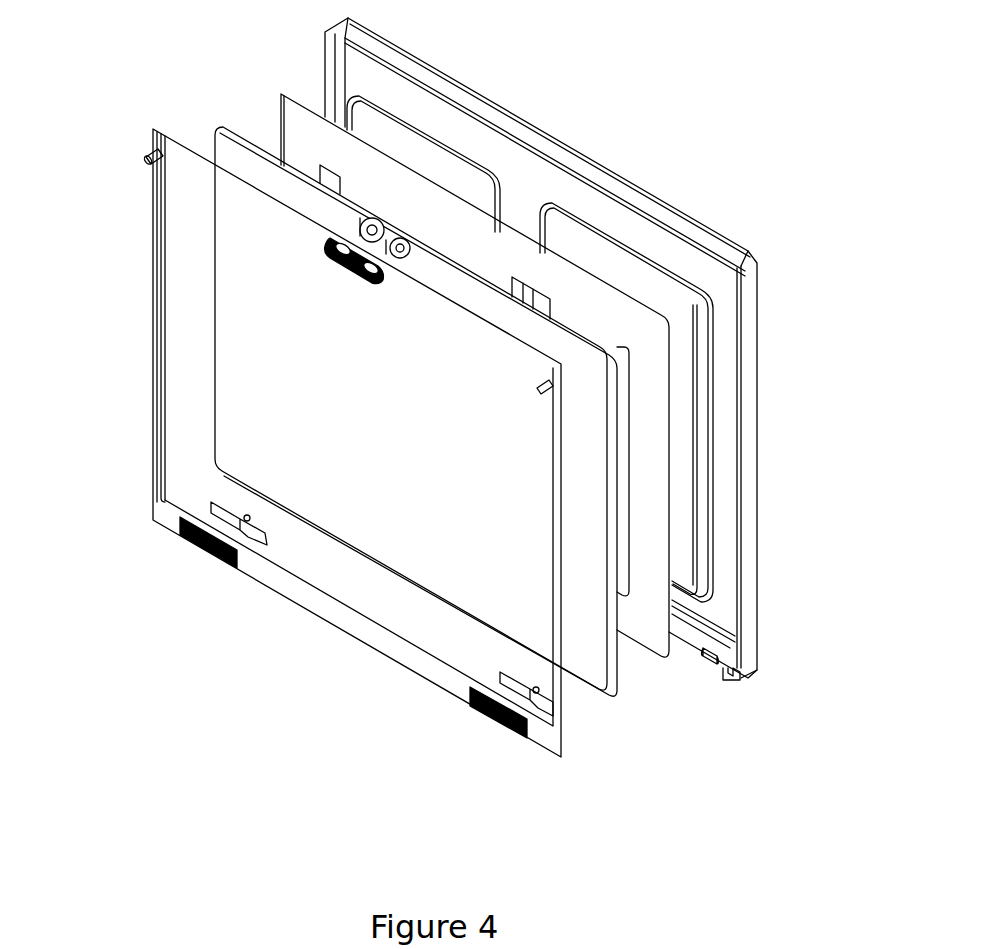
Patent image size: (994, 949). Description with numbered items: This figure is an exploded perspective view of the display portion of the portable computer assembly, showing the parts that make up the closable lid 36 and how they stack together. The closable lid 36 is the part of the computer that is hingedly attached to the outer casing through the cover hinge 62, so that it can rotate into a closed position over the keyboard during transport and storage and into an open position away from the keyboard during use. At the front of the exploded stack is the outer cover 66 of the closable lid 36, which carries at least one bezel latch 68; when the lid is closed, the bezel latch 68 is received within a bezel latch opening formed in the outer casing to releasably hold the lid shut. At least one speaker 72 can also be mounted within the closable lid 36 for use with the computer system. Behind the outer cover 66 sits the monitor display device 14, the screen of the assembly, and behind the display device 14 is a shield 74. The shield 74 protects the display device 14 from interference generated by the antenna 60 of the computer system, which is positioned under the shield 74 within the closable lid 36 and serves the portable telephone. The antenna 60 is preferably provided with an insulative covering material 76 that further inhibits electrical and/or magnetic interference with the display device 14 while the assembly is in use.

The monitor display device 14 is at (219, 126).
The closable lid 36 is at (717, 233).
The antenna 60 is at (715, 237).
The cover hinge 62 is at (735, 672).
The outer cover 66 is at (152, 398).
The bezel latch 68 is at (150, 160).
The speaker 72 is at (212, 502).
The shield 74 is at (283, 112).
The insulative covering material 76 is at (587, 225).